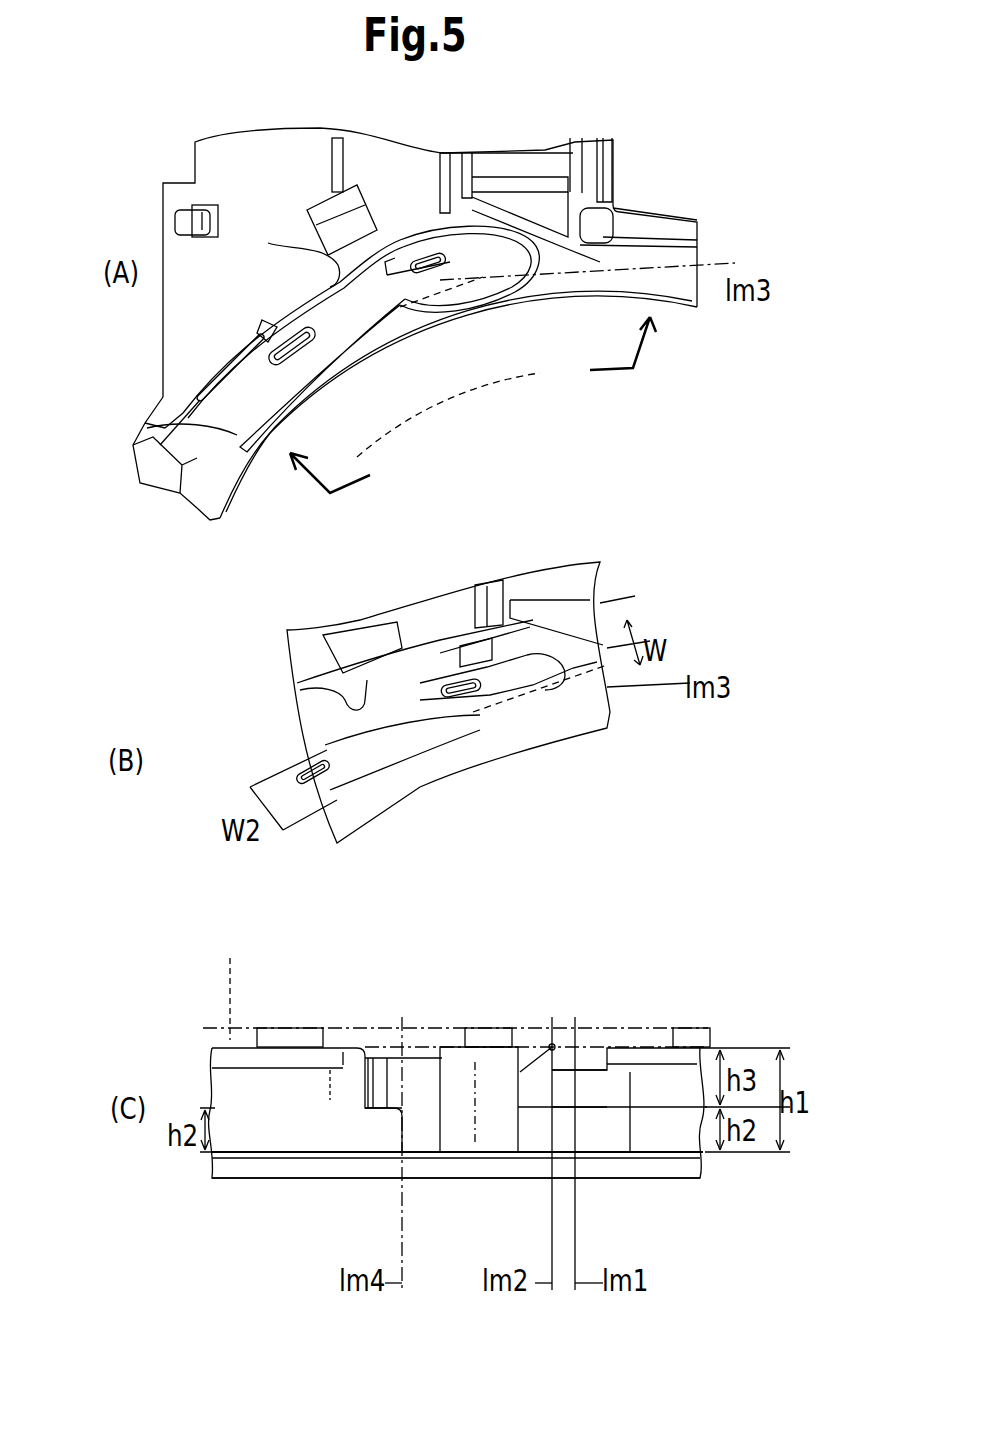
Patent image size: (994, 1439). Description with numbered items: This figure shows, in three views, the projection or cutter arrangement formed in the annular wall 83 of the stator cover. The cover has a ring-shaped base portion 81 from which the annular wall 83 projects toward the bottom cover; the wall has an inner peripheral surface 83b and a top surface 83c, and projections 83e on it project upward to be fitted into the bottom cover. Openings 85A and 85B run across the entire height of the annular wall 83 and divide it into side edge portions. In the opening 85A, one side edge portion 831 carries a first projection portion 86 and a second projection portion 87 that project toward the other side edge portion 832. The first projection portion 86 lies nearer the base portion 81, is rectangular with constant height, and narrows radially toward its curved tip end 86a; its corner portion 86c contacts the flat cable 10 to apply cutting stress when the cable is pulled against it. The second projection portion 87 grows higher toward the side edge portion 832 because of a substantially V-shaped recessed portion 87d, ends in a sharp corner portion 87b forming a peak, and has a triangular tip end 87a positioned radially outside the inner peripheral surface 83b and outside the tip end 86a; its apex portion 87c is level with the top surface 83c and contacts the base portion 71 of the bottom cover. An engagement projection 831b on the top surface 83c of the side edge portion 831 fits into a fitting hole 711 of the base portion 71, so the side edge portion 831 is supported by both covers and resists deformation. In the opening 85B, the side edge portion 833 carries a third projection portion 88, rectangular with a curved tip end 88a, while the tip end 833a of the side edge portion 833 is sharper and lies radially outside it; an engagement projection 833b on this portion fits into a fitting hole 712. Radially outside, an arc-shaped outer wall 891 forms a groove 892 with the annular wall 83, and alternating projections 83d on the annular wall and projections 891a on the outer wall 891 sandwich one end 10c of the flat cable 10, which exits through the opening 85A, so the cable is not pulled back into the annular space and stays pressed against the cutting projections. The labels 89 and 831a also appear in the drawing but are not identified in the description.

The flat cable 10 is at (150, 428).
The one end of the flat cable 10c is at (203, 362).
The base portion of the bottom cover 71 is at (229, 984).
The fitting hole 711 is at (440, 1047).
The fitting hole 712 is at (322, 1028).
The base portion 81 is at (232, 1158).
The annular wall 83 is at (680, 248).
The inner peripheral surface 83b is at (247, 505).
The top surface 83c is at (680, 1045).
The projection 83d is at (445, 645).
The projection 83e is at (375, 255).
The opening 85A is at (585, 308).
The opening 85B is at (395, 333).
The first projection portion 86 is at (535, 280).
The tip end of the first projection portion 86a is at (603, 714).
The corner portion 86c is at (615, 1140).
The second projection portion 87 is at (468, 290).
The tip end of the second projection portion 87a is at (485, 215).
The sharp corner portion 87b is at (503, 622).
The apex portion 87c is at (556, 1048).
The recessed portion 87d is at (512, 1068).
The third projection portion 88 is at (360, 378).
The tip end of the third projection portion 88a is at (405, 770).
The housing 89 is at (262, 170).
The side edge portion 831 is at (420, 320).
The first protrusion surface 831a is at (520, 1028).
The engagement projection 831b is at (415, 215).
The side edge portion 832 is at (628, 250).
The side edge portion 833 is at (305, 362).
The tip end of the side edge portion 833a is at (340, 830).
The engagement projection 833b is at (262, 325).
The outer wall 891 is at (195, 397).
The projection 891a is at (287, 320).
The groove 892 is at (140, 478).